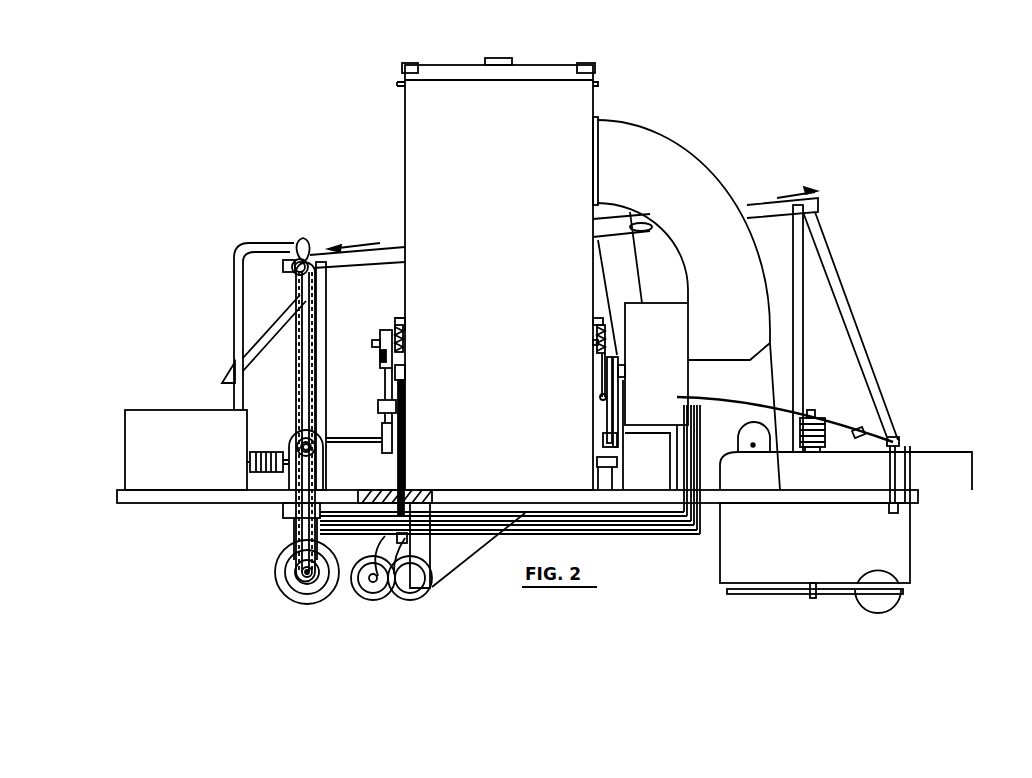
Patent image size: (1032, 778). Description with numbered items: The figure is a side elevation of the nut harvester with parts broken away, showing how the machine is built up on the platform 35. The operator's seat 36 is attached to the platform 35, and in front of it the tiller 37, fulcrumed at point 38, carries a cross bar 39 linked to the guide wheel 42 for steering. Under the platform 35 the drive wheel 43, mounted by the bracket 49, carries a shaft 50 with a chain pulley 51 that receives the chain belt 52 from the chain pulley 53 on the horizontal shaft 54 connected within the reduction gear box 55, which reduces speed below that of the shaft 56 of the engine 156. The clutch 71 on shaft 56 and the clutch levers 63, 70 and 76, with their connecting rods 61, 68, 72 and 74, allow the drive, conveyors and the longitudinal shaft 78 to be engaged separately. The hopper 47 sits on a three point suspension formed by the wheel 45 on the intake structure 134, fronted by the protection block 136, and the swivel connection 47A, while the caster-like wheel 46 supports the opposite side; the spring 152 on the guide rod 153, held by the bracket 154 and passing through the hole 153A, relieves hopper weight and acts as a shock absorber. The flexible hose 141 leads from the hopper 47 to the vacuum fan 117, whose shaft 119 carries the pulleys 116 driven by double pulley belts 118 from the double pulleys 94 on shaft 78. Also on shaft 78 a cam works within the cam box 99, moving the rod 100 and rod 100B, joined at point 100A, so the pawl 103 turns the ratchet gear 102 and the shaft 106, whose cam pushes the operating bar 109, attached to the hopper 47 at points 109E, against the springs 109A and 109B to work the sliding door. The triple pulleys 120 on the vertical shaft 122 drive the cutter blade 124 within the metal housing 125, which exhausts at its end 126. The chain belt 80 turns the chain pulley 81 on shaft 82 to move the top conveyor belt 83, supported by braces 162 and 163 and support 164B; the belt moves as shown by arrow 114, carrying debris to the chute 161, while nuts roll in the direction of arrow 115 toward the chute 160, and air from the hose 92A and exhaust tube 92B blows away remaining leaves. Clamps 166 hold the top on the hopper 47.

The platform 35 is at (165, 505).
The operator's seat 36 is at (626, 470).
The tiller 37 is at (703, 396).
The fulcrum point 38 is at (899, 441).
The cross bar 39 is at (865, 432).
The guide wheel 42 is at (880, 598).
The drive wheel 43 is at (282, 585).
The wheel 45 is at (372, 601).
The wheel 46 is at (428, 593).
The hopper 47 is at (405, 151).
The swivel connection 47A is at (598, 478).
The bracket 49 is at (305, 554).
The shaft 50 is at (311, 583).
The chain pulley 51 is at (303, 582).
The chain belt 52 is at (293, 533).
The chain pulley 53 is at (312, 455).
The horizontal shaft 54 is at (300, 438).
The reduction gear box 55 is at (297, 433).
The engine shaft 56 is at (250, 460).
The connecting rod 61 is at (375, 523).
The clutch lever 63 is at (700, 410).
The connecting rod 68 is at (589, 531).
The clutch lever 70 is at (700, 435).
The clutch 71 is at (283, 446).
The connecting rod 72 is at (283, 510).
The connecting rod 74 is at (478, 550).
The clutch lever 76 is at (684, 408).
The shaft 78 is at (368, 441).
The chain belt 80 is at (296, 379).
The chain pulley 81 is at (297, 273).
The shaft 82 is at (283, 266).
The top conveyor belt 83 is at (757, 205).
The hose 92A is at (234, 310).
The exhaust tube 92B is at (304, 238).
The double pulleys 94 is at (603, 434).
The cam box 99 is at (382, 430).
The rod 100 is at (396, 421).
The swivel connection point 100A is at (378, 406).
The rod 100B is at (385, 388).
The ratchet gear 102 is at (381, 331).
The pawl 103 is at (380, 354).
The shaft 106 is at (372, 342).
The operating bar 109 is at (601, 374).
The spring 109A is at (405, 333).
The spring 109B is at (597, 333).
The attachment points 109E is at (405, 320).
The arrow 114 is at (791, 187).
The arrow 115 is at (357, 246).
The pulleys 116 is at (619, 357).
The vacuum fan 117 is at (680, 355).
The double pulley belts 118 is at (612, 421).
The shaft 119 is at (626, 369).
The triple pulleys 120 is at (825, 419).
The vertical shaft 122 is at (812, 410).
The cutter blade 124 is at (905, 591).
The metal housing 125 is at (912, 569).
The end of housing 126 is at (972, 466).
The intake structure 134 is at (420, 572).
The protection block 136 is at (437, 561).
The flexible hose 141 is at (643, 126).
The spring 152 is at (405, 399).
The guide rod 153 is at (420, 490).
The hole 153A is at (394, 488).
The bracket 154 is at (405, 370).
The engine 156 is at (125, 428).
The chute 160 is at (224, 379).
The chute 161 is at (850, 314).
The brace 162 is at (803, 357).
The brace 163 is at (322, 298).
The support 164B is at (745, 450).
The clamps 166 is at (401, 68).